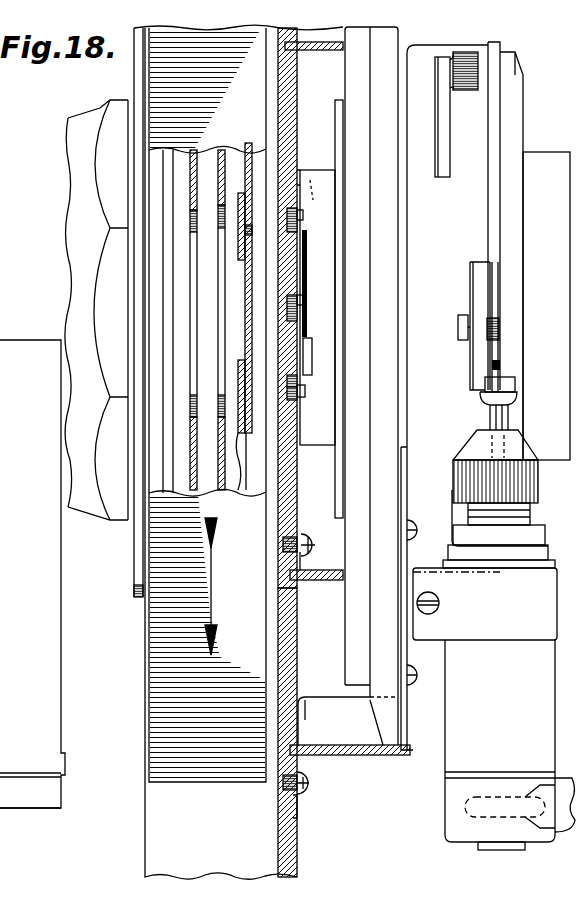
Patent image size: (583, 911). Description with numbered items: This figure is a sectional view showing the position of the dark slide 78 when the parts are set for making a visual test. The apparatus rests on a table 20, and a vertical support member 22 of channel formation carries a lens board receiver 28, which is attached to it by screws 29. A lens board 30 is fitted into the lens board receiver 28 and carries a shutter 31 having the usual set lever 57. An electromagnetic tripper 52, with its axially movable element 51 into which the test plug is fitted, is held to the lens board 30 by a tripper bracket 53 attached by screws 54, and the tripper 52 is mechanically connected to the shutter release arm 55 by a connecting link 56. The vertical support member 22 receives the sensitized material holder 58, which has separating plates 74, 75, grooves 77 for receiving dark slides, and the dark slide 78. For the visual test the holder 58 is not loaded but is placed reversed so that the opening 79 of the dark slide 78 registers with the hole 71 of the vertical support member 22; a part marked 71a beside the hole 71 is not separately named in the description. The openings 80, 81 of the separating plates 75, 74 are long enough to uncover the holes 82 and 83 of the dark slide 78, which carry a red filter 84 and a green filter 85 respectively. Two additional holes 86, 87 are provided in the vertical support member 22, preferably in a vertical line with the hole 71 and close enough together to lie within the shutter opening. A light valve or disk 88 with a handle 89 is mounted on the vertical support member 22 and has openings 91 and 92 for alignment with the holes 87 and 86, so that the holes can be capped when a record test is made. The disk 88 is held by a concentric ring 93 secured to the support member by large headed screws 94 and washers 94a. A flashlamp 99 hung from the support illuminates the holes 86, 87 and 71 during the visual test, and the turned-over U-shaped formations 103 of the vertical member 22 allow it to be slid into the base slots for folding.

The table 20 is at (36, 797).
The vertical support member 22 is at (297, 848).
The lens board receiver 28 is at (321, 50).
The screws 29 is at (316, 792).
The lens board 30 is at (12, 348).
The shutter 31 is at (512, 132).
The axially movable element 51 is at (458, 805).
The electromagnetic tripper 52 is at (460, 753).
The tripper bracket 53 is at (505, 635).
The screws 54 is at (414, 530).
The shutter release arm 55 is at (470, 292).
The connecting link 56 is at (470, 366).
The set lever 57 is at (450, 142).
The sensitized material holder 58 is at (222, 776).
The hole 71 is at (300, 318).
The rod nut 71a is at (303, 302).
The separating plate 74 is at (192, 150).
The separating plate 75 is at (222, 487).
The grooves 77 is at (171, 495).
The dark slide 78 is at (248, 150).
The opening 79 is at (245, 320).
The opening 80 is at (227, 298).
The opening 81 is at (195, 313).
The hole 82 is at (245, 390).
The hole 83 is at (245, 232).
The red filter 84 is at (240, 484).
The green filter 85 is at (245, 195).
The hole 86 is at (300, 398).
The hole 87 is at (293, 223).
The light valve 88 is at (297, 468).
The handle 89 is at (300, 248).
The opening 91 is at (298, 216).
The opening 92 is at (300, 385).
The ring 93 is at (322, 582).
The large headed screws 94 is at (298, 172).
The washers 94a is at (300, 160).
The flashlamp 99 is at (70, 248).
The U-shaped formations 103 is at (136, 600).